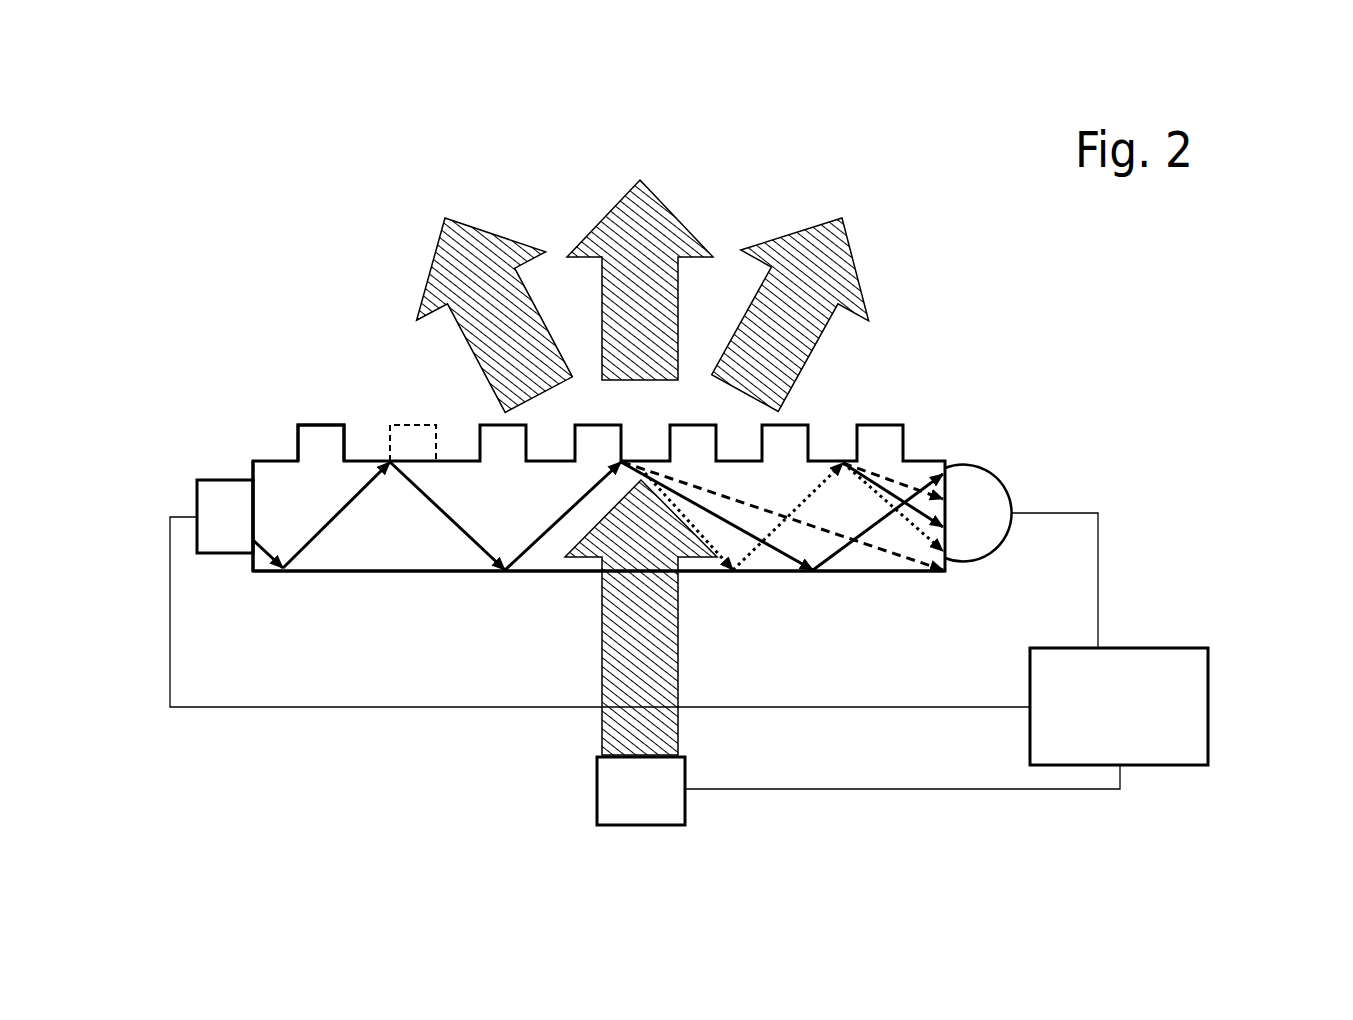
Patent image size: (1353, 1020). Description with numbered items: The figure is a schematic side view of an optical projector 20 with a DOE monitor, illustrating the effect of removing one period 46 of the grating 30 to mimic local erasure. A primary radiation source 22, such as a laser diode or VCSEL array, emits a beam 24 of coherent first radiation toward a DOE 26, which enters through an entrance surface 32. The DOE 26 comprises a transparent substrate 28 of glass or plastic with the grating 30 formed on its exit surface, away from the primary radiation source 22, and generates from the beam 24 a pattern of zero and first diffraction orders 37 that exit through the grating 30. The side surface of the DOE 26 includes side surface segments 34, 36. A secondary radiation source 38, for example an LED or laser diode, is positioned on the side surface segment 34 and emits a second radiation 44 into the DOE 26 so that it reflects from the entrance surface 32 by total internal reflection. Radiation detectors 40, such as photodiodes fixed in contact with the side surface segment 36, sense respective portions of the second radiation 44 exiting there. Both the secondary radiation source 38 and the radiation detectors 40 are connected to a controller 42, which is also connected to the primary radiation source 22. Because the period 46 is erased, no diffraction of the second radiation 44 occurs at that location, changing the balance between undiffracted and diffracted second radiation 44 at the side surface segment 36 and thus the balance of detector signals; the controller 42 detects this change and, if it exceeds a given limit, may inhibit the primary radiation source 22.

The optical projector 20 is at (152, 250).
The primary radiation source 22 is at (627, 792).
The beam 24 is at (615, 731).
The DOE 26 is at (267, 590).
The transparent substrate 28 is at (400, 542).
The grating 30 is at (317, 443).
The entrance surface 32 is at (452, 572).
The side surface segment 34 is at (253, 478).
The side surface segment 36 is at (948, 475).
The zero and first diffraction orders 37 is at (518, 240).
The secondary radiation source 38 is at (225, 510).
The radiation detectors 40 is at (967, 507).
The controller 42 is at (1143, 672).
The second radiation 44 is at (270, 553).
The period 46 is at (402, 437).